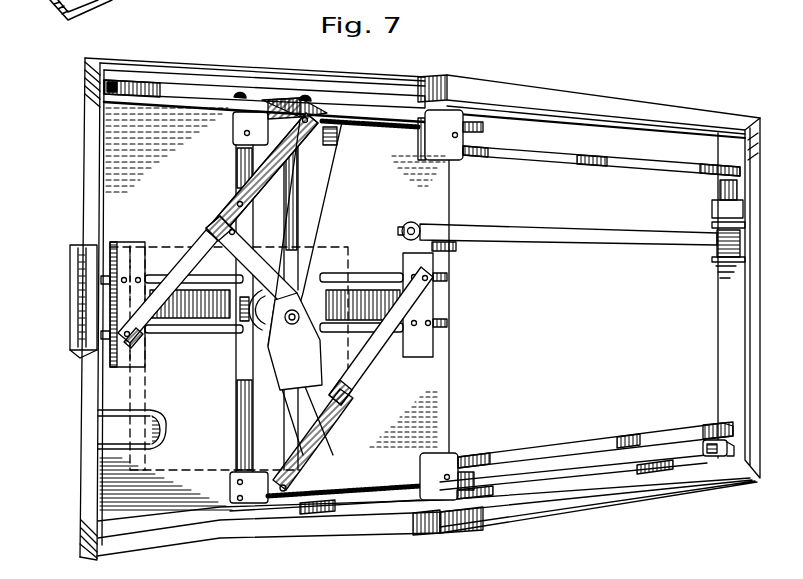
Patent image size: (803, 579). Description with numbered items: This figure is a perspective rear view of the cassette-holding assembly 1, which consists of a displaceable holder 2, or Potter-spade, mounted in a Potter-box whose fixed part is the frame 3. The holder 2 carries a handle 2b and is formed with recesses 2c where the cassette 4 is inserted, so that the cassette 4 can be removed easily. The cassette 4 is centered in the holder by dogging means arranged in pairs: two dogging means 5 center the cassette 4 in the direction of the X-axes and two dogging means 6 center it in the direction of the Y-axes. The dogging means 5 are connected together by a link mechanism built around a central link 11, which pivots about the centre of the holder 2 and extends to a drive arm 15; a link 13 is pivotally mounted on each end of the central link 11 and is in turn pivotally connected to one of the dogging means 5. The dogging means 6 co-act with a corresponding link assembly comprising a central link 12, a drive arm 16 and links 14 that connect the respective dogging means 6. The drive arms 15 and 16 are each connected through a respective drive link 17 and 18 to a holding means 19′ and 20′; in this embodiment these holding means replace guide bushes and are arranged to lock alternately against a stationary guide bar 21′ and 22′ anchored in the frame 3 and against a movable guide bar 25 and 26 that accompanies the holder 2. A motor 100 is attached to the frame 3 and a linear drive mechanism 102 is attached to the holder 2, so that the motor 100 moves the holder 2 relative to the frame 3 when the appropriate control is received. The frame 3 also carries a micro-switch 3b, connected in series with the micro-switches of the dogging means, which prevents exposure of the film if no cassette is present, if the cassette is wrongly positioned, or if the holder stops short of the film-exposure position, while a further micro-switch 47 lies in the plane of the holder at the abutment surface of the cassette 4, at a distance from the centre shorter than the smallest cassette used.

The assembly 1 is at (478, 62).
The holder 2 is at (172, 57).
The handle 2b is at (70, 265).
The recesses 2c is at (84, 430).
The frame 3 is at (640, 94).
The micro-switch 3b is at (722, 457).
The cassette 4 is at (182, 245).
The dogging means 5 is at (125, 242).
The dogging means 6 is at (233, 130).
The central link 11 is at (240, 303).
The central link 12 is at (248, 232).
The links 13 is at (197, 245).
The links 14 is at (268, 107).
The drive arm 15 is at (297, 368).
The drive arm 16 is at (320, 213).
The drive link 17 is at (382, 490).
The drive link 18 is at (364, 130).
The holding means 19′ is at (460, 456).
The holding means 20′ is at (425, 108).
The stationary guide bar 21′ is at (598, 440).
The stationary guide bar 22′ is at (615, 168).
The movable guide bar 25 is at (258, 513).
The movable guide bar 26 is at (205, 98).
The micro-switch 47 is at (253, 268).
The motor 100 is at (716, 192).
The linear drive mechanism 102 is at (650, 250).